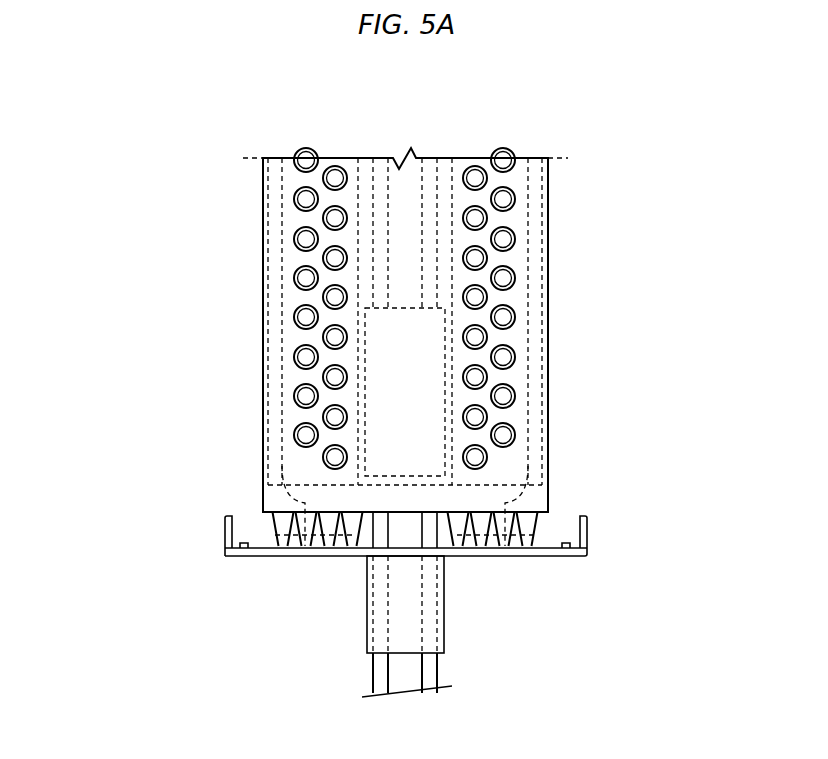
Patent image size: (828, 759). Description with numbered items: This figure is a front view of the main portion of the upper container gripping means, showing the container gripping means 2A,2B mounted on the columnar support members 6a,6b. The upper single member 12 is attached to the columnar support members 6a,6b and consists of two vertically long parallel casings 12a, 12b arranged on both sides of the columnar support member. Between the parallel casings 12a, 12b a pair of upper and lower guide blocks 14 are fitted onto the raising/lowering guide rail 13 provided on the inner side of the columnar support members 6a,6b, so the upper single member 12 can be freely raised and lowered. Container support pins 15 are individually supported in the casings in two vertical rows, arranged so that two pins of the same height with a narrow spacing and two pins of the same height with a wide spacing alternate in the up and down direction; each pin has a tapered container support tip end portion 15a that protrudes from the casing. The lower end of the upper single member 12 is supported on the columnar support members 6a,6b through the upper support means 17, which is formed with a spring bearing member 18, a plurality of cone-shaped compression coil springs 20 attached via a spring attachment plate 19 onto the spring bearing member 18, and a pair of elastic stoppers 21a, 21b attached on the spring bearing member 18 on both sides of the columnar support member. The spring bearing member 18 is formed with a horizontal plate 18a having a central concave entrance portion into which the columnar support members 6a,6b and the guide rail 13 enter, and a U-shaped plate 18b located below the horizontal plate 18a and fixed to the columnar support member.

The container gripping means 2A,2B is at (335, 330).
The upper single member 12 is at (263, 302).
The parallel casing 12a is at (548, 182).
The parallel casing 12b is at (282, 176).
The raising/lowering guide rail 13 is at (403, 182).
The guide block 14 is at (425, 413).
The container support pin 15 is at (323, 219).
The container support tip end portion 15a is at (335, 297).
The upper support means 17 is at (455, 538).
The spring bearing member 18 is at (393, 572).
The horizontal plate 18a is at (270, 558).
The U-shaped plate 18b is at (395, 636).
The spring attachment plate 19 is at (400, 546).
The compression coil spring 20 is at (329, 547).
The stopper 21a is at (530, 472).
The stopper 21b is at (284, 476).
The columnar support members 6a,6b is at (430, 678).